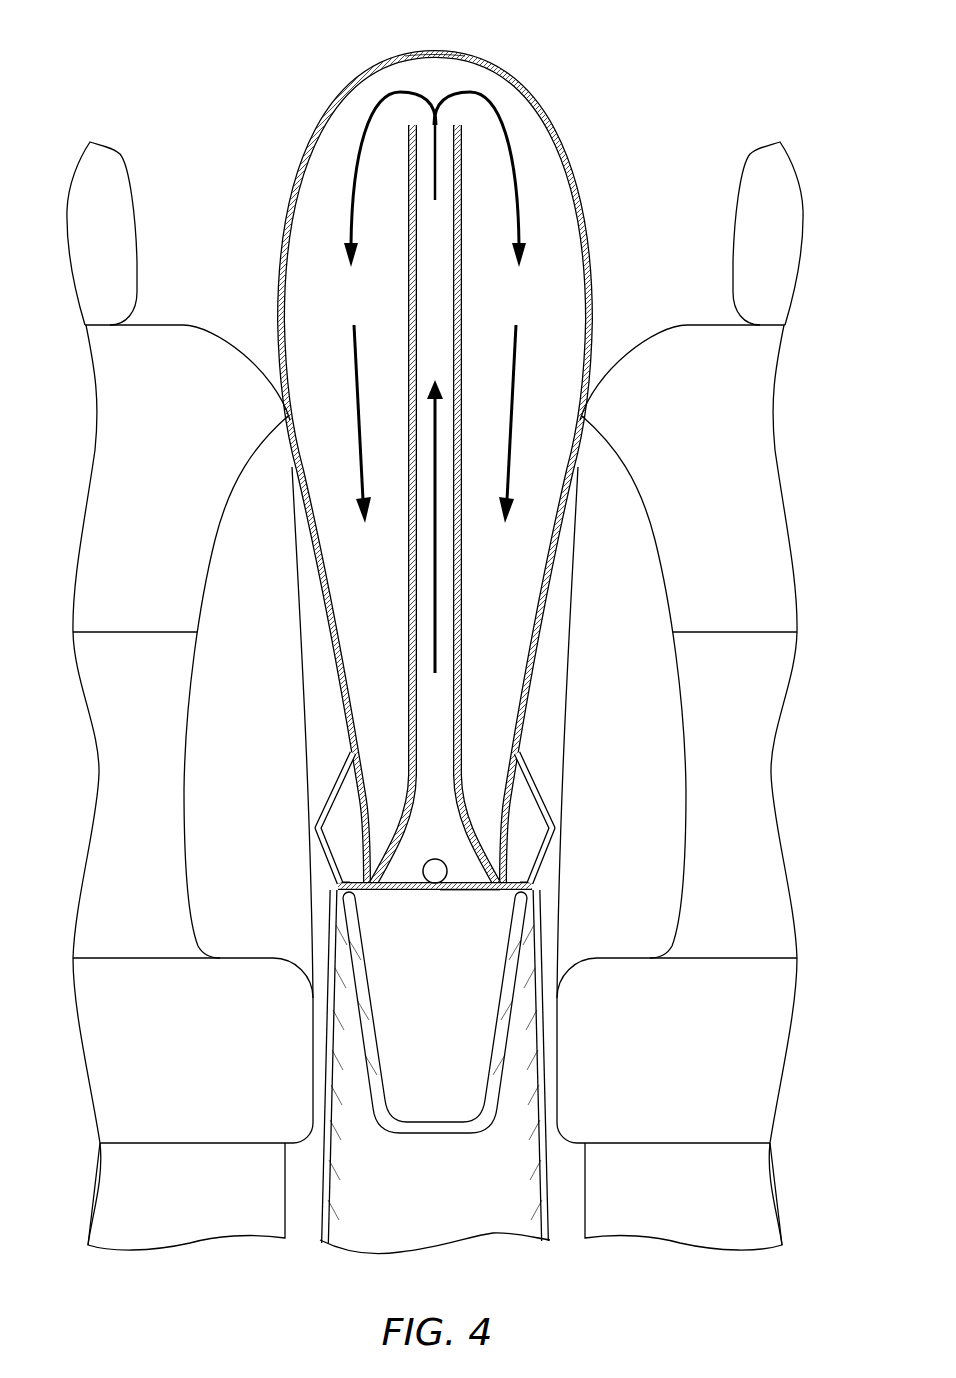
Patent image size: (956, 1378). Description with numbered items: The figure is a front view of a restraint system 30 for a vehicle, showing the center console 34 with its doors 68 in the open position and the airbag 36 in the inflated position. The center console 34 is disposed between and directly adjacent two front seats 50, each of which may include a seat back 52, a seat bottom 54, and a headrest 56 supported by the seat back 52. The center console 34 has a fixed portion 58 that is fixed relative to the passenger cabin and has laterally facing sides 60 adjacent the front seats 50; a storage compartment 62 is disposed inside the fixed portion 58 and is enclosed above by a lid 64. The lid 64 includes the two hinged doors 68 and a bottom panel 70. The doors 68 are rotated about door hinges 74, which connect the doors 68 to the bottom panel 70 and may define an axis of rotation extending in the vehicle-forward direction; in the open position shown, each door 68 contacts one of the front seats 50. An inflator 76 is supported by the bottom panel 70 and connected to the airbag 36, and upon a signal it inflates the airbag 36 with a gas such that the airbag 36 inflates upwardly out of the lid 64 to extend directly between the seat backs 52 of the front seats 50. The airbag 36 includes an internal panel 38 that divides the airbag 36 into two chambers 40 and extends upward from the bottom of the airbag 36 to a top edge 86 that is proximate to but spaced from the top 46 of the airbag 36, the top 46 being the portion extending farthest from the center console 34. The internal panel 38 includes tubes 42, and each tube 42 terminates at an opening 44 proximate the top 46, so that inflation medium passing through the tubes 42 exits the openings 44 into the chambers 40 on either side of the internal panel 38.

The restraint system 30 is at (606, 58).
The center console 34 is at (552, 1025).
The airbag 36 is at (566, 148).
The internal panel 38 is at (462, 283).
The chambers 40 is at (362, 607).
The tubes 42 is at (408, 305).
The opening 44 is at (411, 110).
The top 46 is at (433, 52).
The front seat 50 is at (157, 312).
The seat back 52 is at (186, 324).
The seat bottom 54 is at (195, 1147).
The headrest 56 is at (127, 180).
The fixed portion 58 is at (327, 1063).
The sides 60 is at (322, 1207).
The storage compartment 62 is at (502, 1065).
The lid 64 is at (550, 877).
The doors 68 is at (333, 783).
The bottom panel 70 is at (458, 893).
The door hinges 74 is at (337, 890).
The inflator 76 is at (435, 858).
The top edge 86 is at (459, 110).